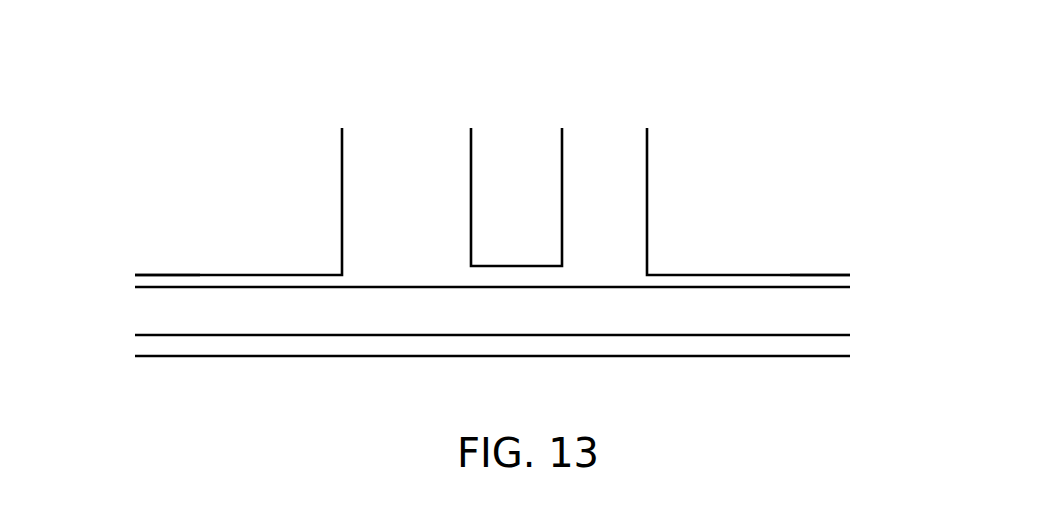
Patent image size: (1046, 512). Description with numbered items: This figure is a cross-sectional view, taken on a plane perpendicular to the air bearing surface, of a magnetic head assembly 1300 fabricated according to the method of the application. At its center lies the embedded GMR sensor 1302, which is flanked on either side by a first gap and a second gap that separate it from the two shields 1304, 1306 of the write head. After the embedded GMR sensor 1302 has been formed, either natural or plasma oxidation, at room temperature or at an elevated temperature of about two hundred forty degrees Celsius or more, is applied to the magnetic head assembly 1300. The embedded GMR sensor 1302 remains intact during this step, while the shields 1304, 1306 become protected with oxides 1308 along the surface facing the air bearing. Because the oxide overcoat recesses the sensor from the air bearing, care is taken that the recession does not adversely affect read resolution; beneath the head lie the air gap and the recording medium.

The magnetic head assembly 1300 is at (268, 148).
The embedded GMR sensor 1302 is at (470, 129).
The shield 1304 is at (213, 228).
The shield 1306 is at (805, 226).
The oxides 1308 is at (163, 275).